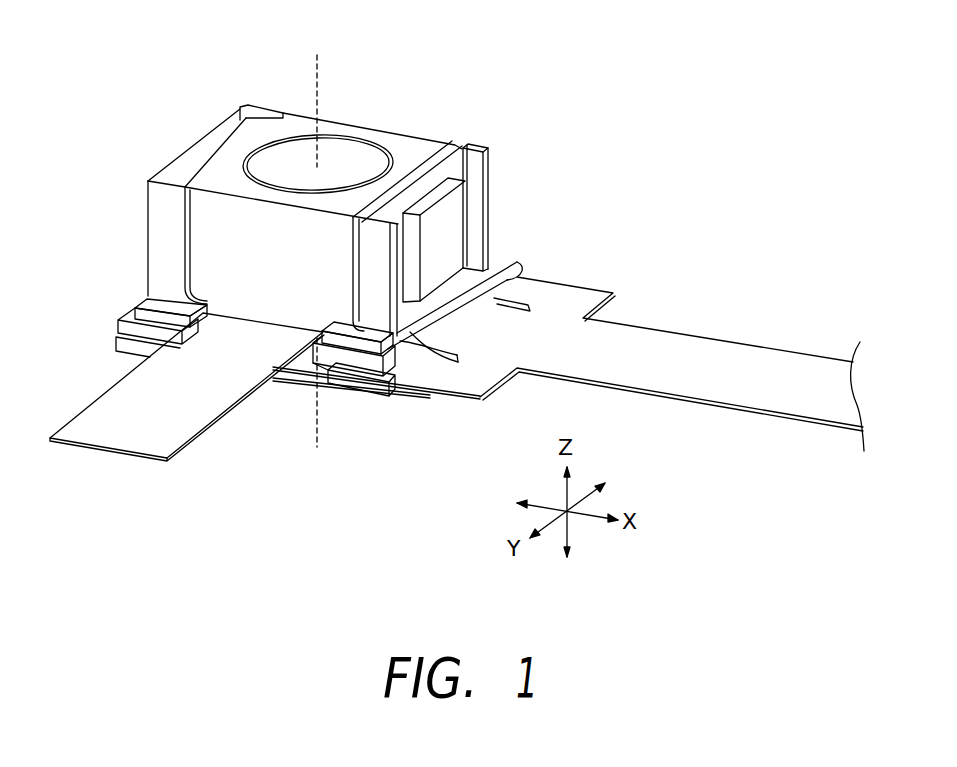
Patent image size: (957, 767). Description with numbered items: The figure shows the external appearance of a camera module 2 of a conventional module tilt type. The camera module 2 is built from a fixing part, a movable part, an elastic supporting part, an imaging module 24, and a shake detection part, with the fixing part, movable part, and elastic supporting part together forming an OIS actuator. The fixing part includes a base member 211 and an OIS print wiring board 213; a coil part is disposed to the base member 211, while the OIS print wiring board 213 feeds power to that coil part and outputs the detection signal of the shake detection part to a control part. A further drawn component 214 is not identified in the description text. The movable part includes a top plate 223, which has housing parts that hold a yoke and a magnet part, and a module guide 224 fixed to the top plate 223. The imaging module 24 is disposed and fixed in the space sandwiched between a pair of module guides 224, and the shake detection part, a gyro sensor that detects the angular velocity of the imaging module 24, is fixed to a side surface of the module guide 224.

The camera module 2 is at (506, 117).
The imaging module 24 is at (320, 124).
The base member 211 is at (117, 348).
The OIS print wiring board 213 is at (662, 336).
The side plate 214 is at (466, 222).
The top plate 223 is at (517, 264).
The module guide 224 is at (488, 161).